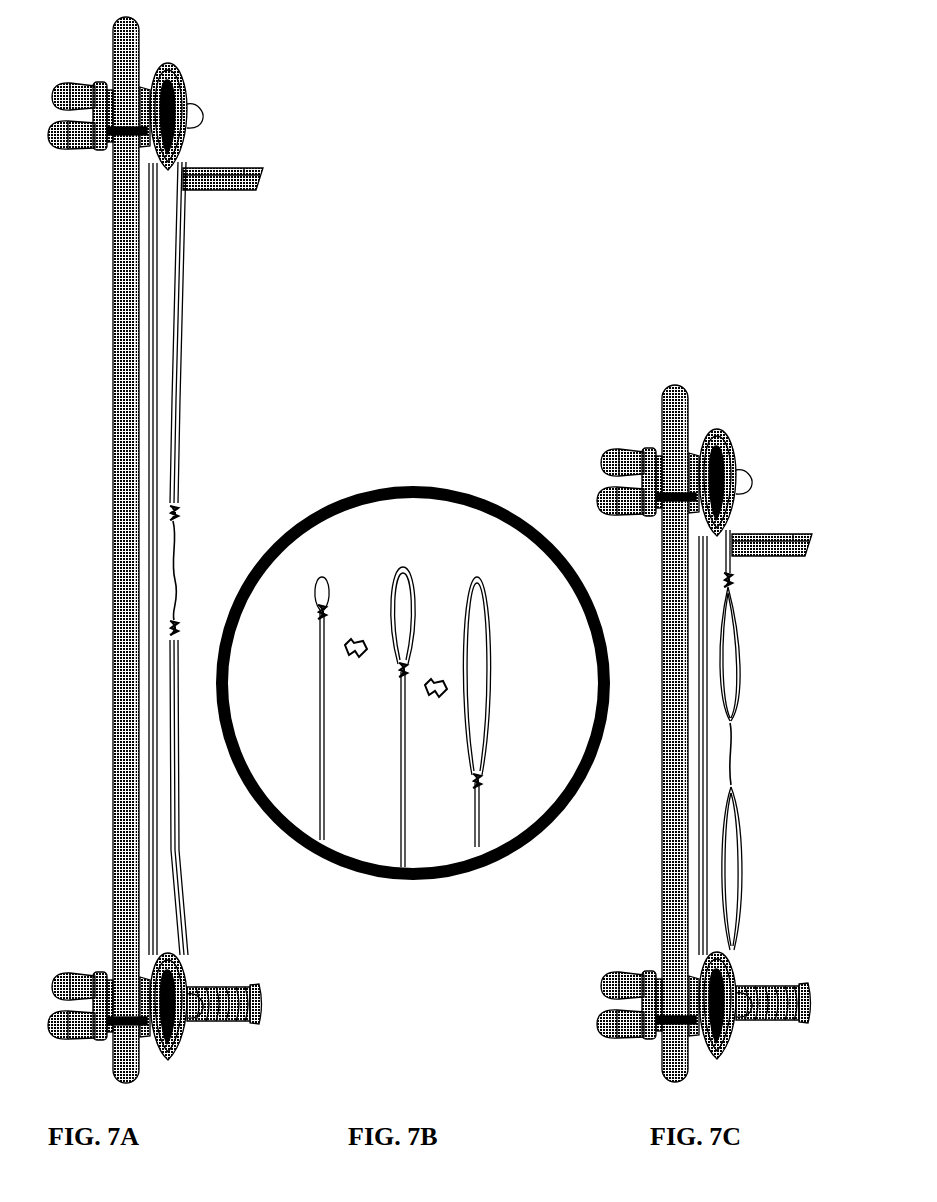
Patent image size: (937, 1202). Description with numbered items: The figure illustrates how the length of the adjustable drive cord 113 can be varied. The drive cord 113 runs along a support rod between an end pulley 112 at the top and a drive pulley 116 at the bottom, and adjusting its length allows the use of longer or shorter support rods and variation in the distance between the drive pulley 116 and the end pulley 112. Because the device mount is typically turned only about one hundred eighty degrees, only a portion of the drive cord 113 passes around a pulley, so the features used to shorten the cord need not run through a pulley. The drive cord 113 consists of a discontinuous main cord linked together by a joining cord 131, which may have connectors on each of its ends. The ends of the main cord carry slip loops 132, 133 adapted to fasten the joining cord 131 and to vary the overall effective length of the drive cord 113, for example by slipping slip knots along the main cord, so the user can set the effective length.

In FIG. 7A, the end pulley 112 is at (167, 60).
In FIG. 7A, the drive cord 113 is at (150, 342).
In FIG. 7A, the drive pulley 116 is at (185, 1046).
In FIG. 7A, the joining cord 131 is at (172, 563).
In FIG. 7C, the joining cord 131 is at (731, 742).
In FIG. 7C, the slip loop 132 is at (740, 626).
In FIG. 7C, the slip loop 133 is at (740, 855).